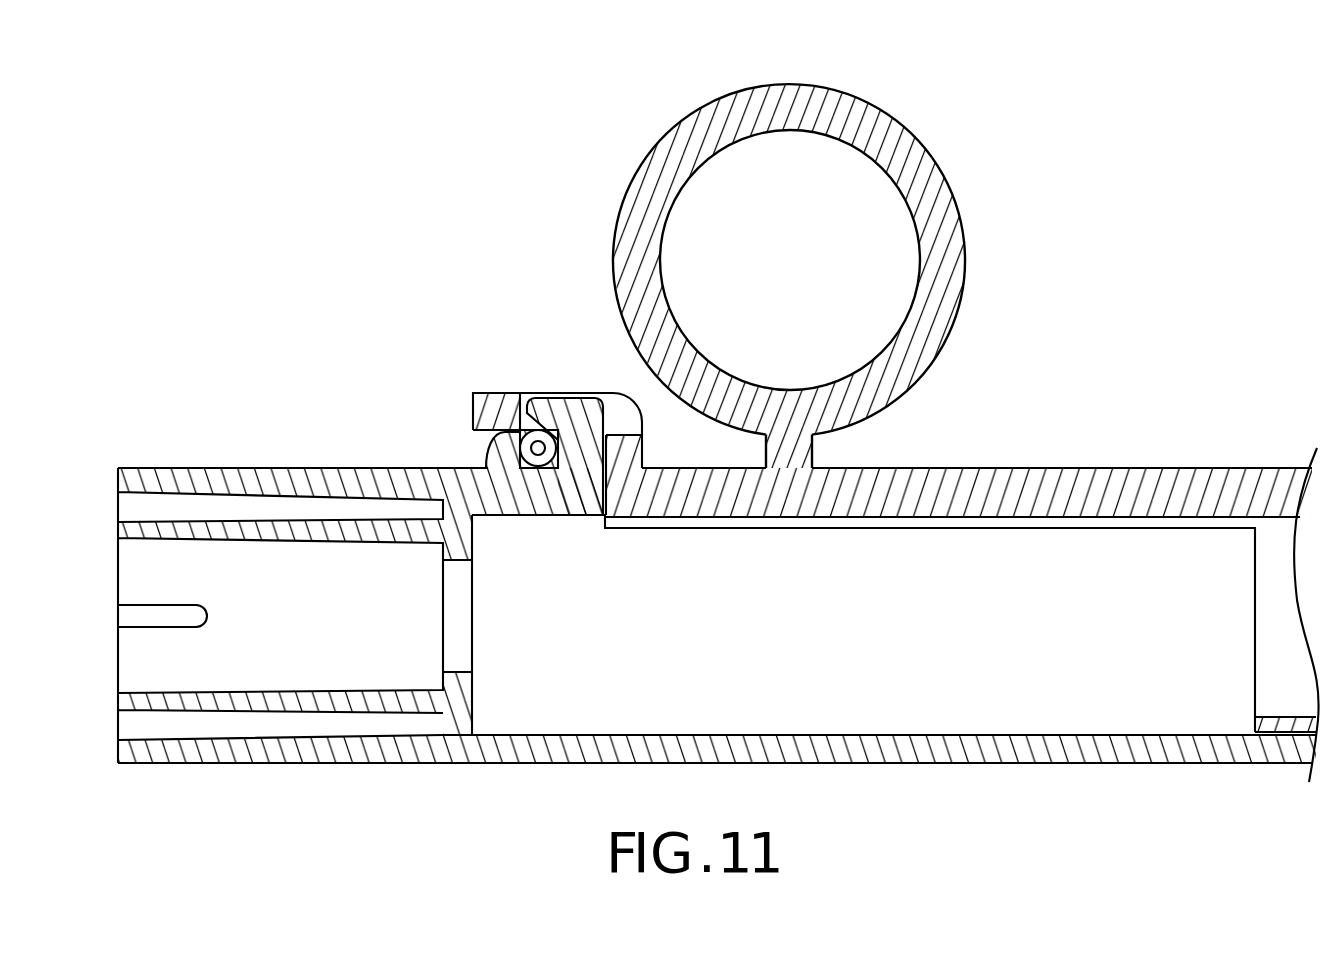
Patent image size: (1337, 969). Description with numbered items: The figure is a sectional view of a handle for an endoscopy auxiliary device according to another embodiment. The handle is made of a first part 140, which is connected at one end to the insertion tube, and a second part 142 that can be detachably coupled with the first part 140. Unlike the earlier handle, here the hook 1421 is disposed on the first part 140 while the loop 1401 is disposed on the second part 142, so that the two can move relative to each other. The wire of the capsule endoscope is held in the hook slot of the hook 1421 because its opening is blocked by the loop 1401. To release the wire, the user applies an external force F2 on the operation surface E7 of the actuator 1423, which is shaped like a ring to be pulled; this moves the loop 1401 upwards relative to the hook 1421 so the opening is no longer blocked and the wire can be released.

The first part 140 is at (190, 462).
The second part 142 is at (1103, 464).
The loop 1401 is at (497, 403).
The hook 1421 is at (553, 407).
The actuator 1423 is at (877, 117).
The external force F2 is at (790, 140).
The operation surface E7 is at (845, 160).